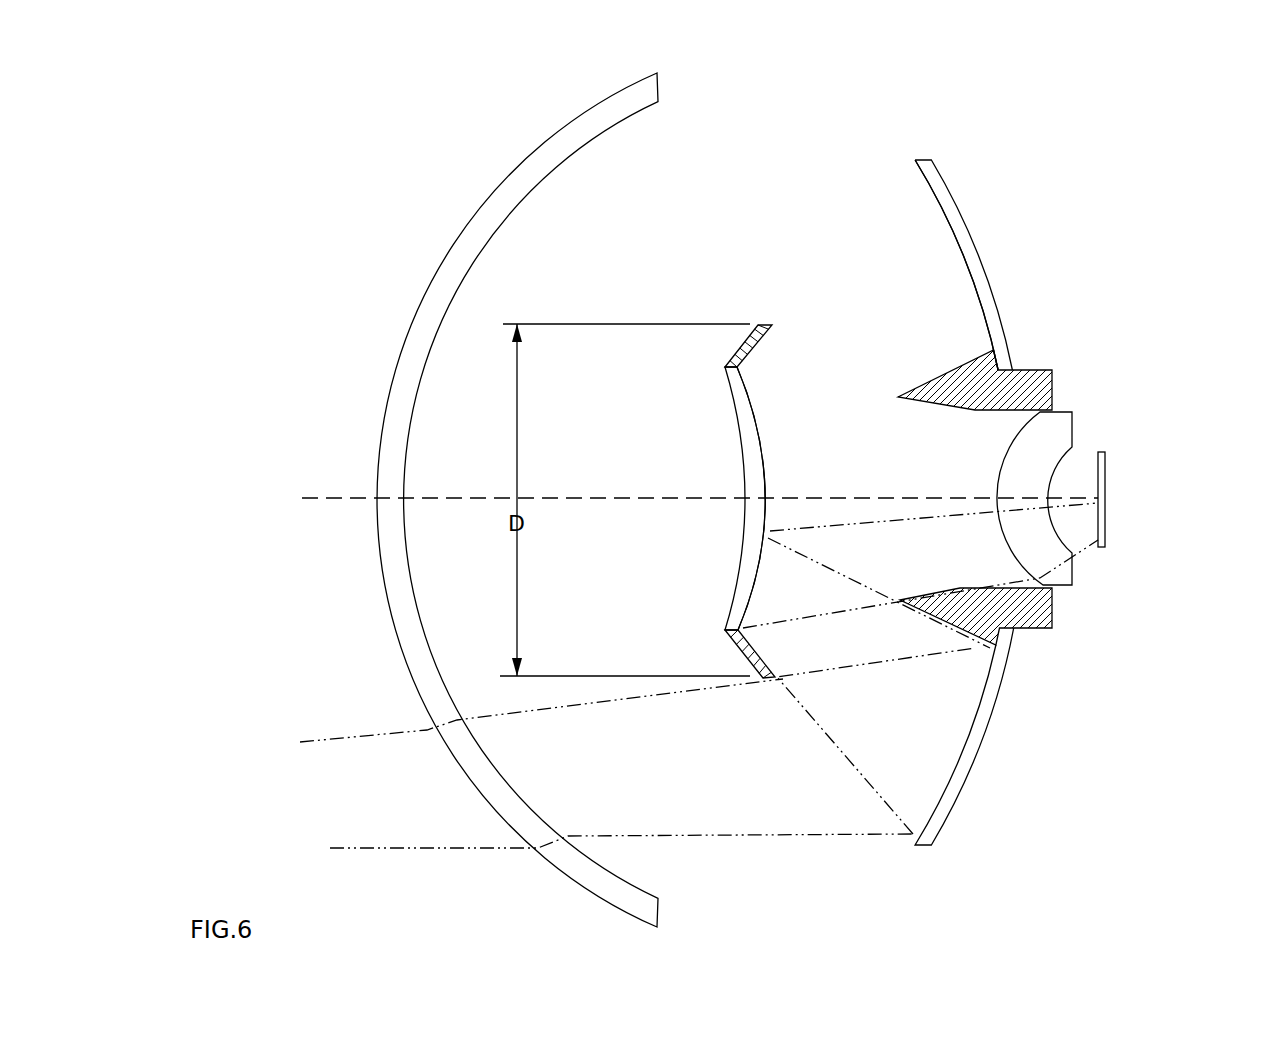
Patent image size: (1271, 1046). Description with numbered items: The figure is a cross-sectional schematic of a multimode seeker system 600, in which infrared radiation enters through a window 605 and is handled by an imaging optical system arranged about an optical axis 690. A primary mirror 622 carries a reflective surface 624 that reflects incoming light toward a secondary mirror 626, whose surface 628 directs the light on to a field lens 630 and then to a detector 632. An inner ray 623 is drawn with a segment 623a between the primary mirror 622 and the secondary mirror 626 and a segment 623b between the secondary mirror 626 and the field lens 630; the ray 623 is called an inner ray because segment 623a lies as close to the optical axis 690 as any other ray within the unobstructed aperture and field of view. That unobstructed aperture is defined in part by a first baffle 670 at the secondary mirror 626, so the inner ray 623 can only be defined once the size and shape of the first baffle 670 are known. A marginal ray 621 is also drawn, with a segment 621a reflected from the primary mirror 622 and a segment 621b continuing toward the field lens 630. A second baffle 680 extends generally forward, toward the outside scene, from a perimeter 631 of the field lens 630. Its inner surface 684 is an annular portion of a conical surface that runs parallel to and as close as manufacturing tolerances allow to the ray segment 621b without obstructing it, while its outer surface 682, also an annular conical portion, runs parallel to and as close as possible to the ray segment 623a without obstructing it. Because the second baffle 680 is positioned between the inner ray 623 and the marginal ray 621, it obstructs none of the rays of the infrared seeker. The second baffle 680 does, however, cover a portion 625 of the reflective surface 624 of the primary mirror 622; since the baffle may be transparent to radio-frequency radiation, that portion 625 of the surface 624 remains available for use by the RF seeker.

The optical system 600 is at (1078, 100).
The window 605 is at (598, 100).
The primary mirror 622 is at (952, 192).
The reflective surface 624 is at (976, 315).
The secondary mirror 626 is at (737, 437).
The lens surface 628 is at (756, 386).
The field lens 630 is at (1072, 432).
The perimeter 631 is at (1060, 410).
The detector 632 is at (1107, 487).
The second baffle 680 is at (1053, 605).
The portion of the reflective surface 625 is at (1004, 643).
The outer surface 682 is at (961, 650).
The inner surface 684 is at (955, 585).
The first baffle 670 is at (747, 657).
The optical axis 690 is at (345, 498).
The inner ray 623 is at (392, 733).
The segment 623a is at (853, 578).
The segment 623b is at (838, 523).
The marginal ray 621 is at (453, 848).
The reflected ray path 621a is at (823, 727).
The segment 621b is at (817, 613).